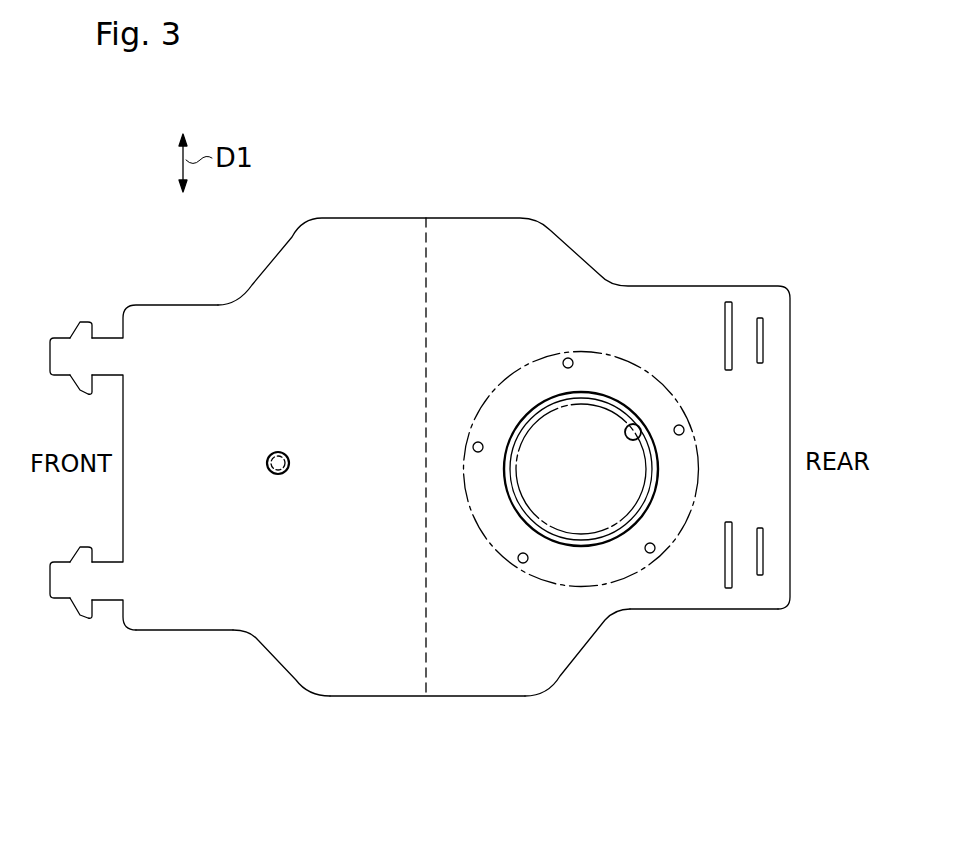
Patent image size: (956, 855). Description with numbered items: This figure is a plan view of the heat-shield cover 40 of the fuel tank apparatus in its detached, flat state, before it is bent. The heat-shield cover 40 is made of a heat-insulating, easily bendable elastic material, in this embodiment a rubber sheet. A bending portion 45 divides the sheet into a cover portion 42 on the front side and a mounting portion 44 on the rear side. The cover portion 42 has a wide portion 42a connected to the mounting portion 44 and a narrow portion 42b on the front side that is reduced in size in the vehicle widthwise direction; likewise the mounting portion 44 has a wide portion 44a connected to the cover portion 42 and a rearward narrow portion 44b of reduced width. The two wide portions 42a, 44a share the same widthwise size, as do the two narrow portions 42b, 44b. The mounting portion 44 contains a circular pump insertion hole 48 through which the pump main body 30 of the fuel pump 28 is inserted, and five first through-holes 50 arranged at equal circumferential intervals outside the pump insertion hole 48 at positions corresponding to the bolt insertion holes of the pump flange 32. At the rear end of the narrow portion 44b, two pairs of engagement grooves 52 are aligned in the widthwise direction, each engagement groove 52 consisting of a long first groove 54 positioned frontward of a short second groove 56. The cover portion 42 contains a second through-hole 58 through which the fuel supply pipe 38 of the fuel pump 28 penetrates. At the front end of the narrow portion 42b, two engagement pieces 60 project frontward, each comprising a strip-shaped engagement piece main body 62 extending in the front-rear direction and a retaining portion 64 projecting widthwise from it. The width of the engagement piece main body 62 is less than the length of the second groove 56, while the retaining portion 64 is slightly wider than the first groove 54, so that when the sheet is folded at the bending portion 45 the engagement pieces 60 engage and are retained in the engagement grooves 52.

The fuel pump 28 is at (581, 357).
The pump main body 30 is at (553, 406).
The pump flange 32 is at (512, 372).
The fuel supply pipe 38 is at (265, 461).
The heat-shield cover 40 is at (363, 712).
The cover portion 42 is at (233, 688).
The wide portion 42a is at (318, 665).
The narrow portion 42b is at (193, 618).
The mounting portion 44 is at (651, 680).
The wide portion 44a is at (545, 660).
The narrow portion 44b is at (662, 607).
The bending portion 45 is at (426, 256).
The pump insertion hole 48 is at (634, 424).
The first through-holes 50 is at (570, 358).
The engagement grooves 52 is at (759, 449).
The first groove 54 is at (729, 306).
The second groove 56 is at (760, 318).
The second through-hole 58 is at (278, 452).
The engagement pieces 60 is at (88, 473).
The engagement piece main body 62 is at (60, 345).
The retaining portion 64 is at (52, 262).